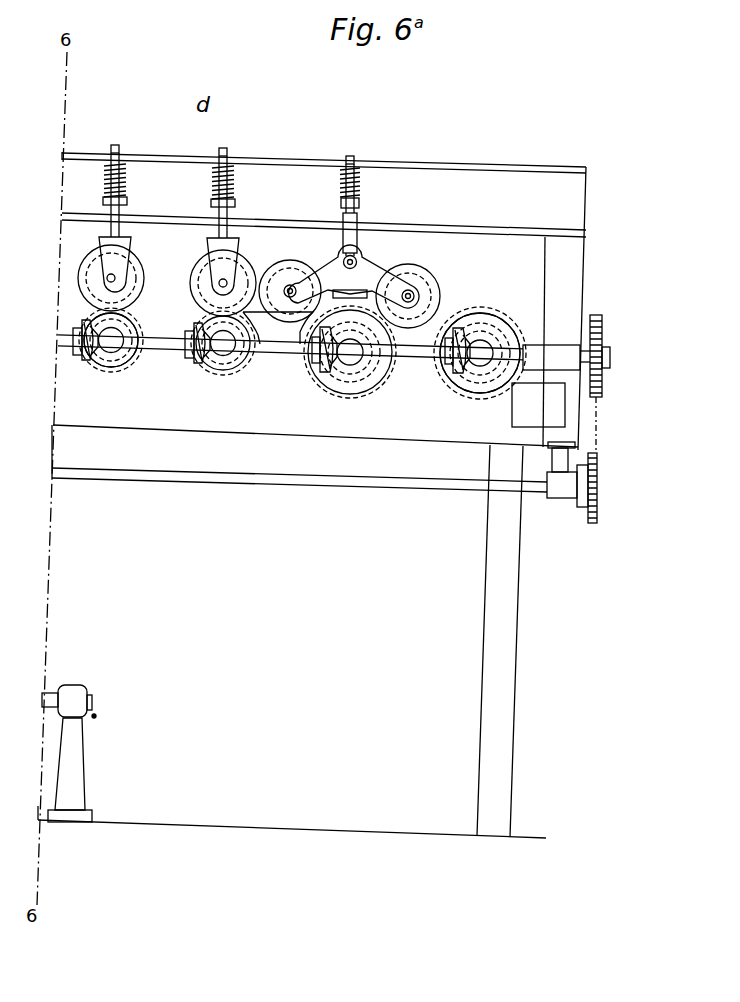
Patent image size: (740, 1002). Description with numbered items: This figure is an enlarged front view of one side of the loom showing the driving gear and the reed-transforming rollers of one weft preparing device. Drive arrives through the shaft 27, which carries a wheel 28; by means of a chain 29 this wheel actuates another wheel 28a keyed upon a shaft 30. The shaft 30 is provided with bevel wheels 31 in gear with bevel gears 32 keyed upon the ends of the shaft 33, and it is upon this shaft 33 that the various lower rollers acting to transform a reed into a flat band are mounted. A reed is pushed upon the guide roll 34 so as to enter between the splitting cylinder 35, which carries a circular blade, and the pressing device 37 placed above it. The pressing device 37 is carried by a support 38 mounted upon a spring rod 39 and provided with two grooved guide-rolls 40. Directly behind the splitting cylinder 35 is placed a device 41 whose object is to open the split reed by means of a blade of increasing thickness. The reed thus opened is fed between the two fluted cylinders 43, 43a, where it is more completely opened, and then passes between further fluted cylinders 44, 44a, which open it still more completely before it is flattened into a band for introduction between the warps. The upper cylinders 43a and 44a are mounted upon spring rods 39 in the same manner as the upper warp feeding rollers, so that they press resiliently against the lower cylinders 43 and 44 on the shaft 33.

The shaft 27 is at (180, 477).
The wheel 28 is at (597, 503).
The wheel 28a is at (603, 334).
The chain 29 is at (605, 418).
The shaft 30 is at (413, 353).
The bevel wheels 31 is at (89, 360).
The bevel gears 32 is at (116, 366).
The shaft 33 is at (198, 366).
The guide roll 34 is at (470, 310).
The splitting cylinder 35 is at (316, 381).
The pressing device 37 is at (349, 296).
The support 38 is at (330, 275).
The spring rod 39 is at (226, 155).
The grooved guide-rolls 40 is at (283, 269).
The opening device 41 is at (273, 334).
The fluted cylinder 43 is at (200, 315).
The upper fluted cylinder 43a is at (207, 268).
The fluted cylinder 44 is at (137, 323).
The upper fluted cylinder 44a is at (93, 263).